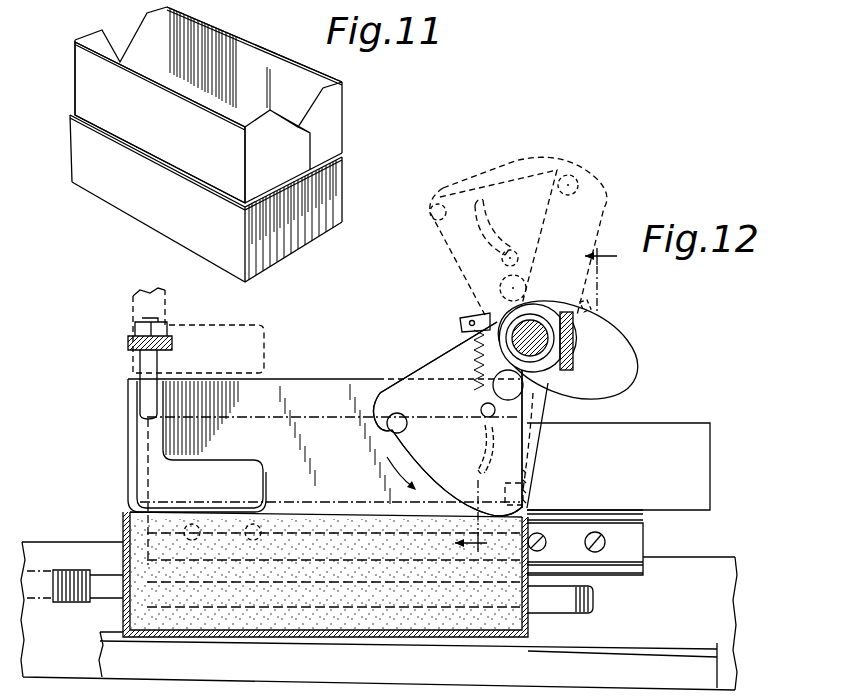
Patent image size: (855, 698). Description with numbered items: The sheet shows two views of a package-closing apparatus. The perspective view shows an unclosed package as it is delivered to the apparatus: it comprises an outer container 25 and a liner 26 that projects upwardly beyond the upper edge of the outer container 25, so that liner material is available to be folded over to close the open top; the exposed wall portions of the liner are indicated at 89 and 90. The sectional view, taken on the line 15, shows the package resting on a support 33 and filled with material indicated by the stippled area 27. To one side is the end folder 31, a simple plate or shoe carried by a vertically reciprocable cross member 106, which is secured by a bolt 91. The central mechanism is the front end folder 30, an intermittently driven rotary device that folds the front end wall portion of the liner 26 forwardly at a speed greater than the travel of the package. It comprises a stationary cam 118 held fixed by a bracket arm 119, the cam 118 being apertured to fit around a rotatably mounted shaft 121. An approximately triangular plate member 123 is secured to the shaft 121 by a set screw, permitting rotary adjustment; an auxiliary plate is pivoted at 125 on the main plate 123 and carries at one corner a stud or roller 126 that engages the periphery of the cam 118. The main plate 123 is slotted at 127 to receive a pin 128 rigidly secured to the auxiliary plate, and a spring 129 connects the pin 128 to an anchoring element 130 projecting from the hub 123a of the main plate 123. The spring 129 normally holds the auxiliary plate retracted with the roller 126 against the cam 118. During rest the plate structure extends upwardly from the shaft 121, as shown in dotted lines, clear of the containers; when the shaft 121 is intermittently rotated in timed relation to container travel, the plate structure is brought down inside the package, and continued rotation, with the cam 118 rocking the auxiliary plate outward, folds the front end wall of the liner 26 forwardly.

In FIG. 11, the outer container 25 is at (343, 172).
In FIG. 12, the outer container 25 is at (123, 523).
In FIG. 11, the liner 26 is at (342, 117).
In FIG. 12, the liner 26 is at (128, 462).
In FIG. 11, the front wall of liner 89 is at (160, 122).
In FIG. 11, the back wall of liner 90 is at (248, 52).
In FIG. 12, the vertically reciprocable cross member 106 is at (128, 342).
In FIG. 12, the end folder 31 is at (138, 429).
In FIG. 12, the mounting bolt 91 is at (100, 598).
In FIG. 12, the stippled area 27 is at (350, 513).
In FIG. 12, the section line 15 is at (523, 392).
In FIG. 12, the pivot 125 is at (387, 430).
In FIG. 12, the triangular plate member 123 is at (407, 372).
In FIG. 12, the hub 123a is at (524, 300).
In FIG. 12, the shaft 121 is at (557, 373).
In FIG. 12, the spring 129 is at (470, 347).
In FIG. 12, the front end folder 30 is at (449, 338).
In FIG. 12, the anchoring element 130 is at (463, 314).
In FIG. 12, the bracket arm 119 is at (574, 340).
In FIG. 12, the stationary cam 118 is at (637, 351).
In FIG. 12, the stud or roller 126 is at (541, 398).
In FIG. 12, the pin 128 is at (481, 410).
In FIG. 12, the slot 127 is at (478, 458).
In FIG. 12, the support block 33 is at (662, 428).